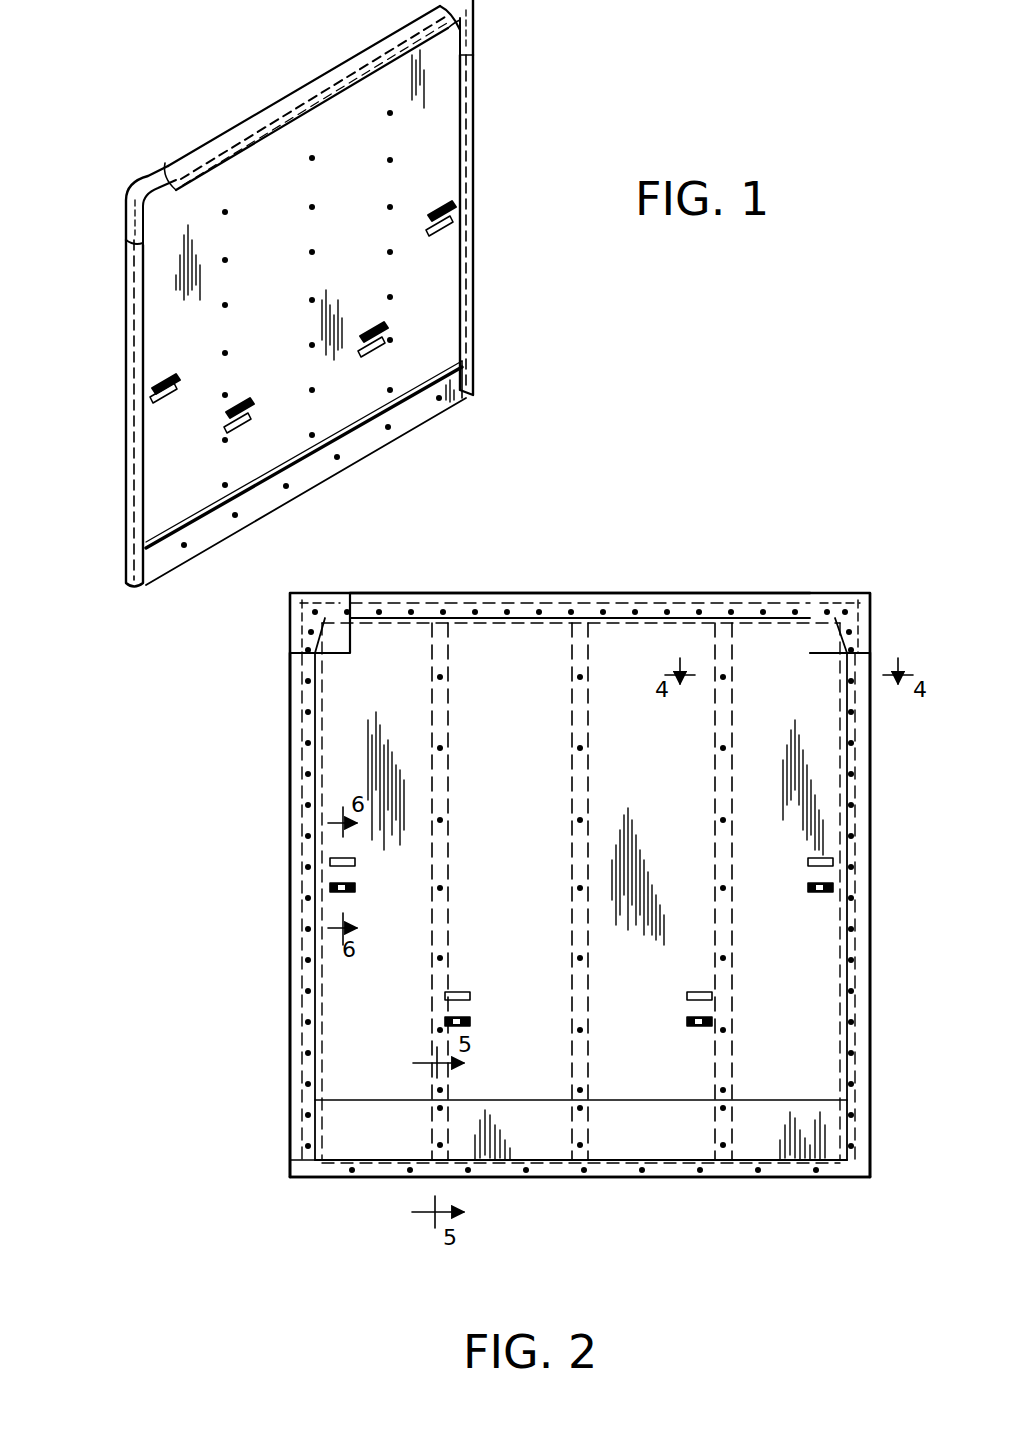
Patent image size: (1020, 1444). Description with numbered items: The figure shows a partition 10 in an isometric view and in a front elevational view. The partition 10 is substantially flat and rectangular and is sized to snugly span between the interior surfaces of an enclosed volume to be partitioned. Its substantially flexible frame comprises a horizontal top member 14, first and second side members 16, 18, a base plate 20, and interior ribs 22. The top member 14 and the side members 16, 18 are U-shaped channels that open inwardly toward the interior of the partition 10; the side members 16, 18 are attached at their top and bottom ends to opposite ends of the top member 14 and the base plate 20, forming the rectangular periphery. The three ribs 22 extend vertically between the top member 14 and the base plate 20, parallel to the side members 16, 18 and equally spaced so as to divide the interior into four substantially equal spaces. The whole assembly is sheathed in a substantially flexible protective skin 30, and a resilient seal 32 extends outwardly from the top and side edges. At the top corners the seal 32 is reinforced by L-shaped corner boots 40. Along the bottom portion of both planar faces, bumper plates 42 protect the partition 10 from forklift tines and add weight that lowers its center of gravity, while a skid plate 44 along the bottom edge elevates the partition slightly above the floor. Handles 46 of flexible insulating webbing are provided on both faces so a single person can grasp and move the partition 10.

In FIG. 1, the partition 10 is at (214, 30).
In FIG. 2, the top member 14 is at (540, 592).
In FIG. 2, the first side member 16 is at (290, 767).
In FIG. 2, the second side member 18 is at (872, 720).
In FIG. 2, the base plate 20 is at (731, 1190).
In FIG. 2, the interior ribs 22 is at (572, 688).
In FIG. 1, the protective skin 30 is at (418, 115).
In FIG. 2, the protective skin 30 is at (368, 674).
In FIG. 1, the resilient seal 32 is at (272, 108).
In FIG. 2, the resilient seal 32 is at (637, 592).
In FIG. 1, the corner boots 40 is at (454, 22).
In FIG. 2, the corner boots 40 is at (303, 602).
In FIG. 1, the bumper plates 42 is at (200, 525).
In FIG. 2, the bumper plates 42 is at (350, 1133).
In FIG. 2, the skid plate 44 is at (342, 1180).
In FIG. 1, the handles 46 is at (446, 210).
In FIG. 2, the handles 46 is at (350, 886).